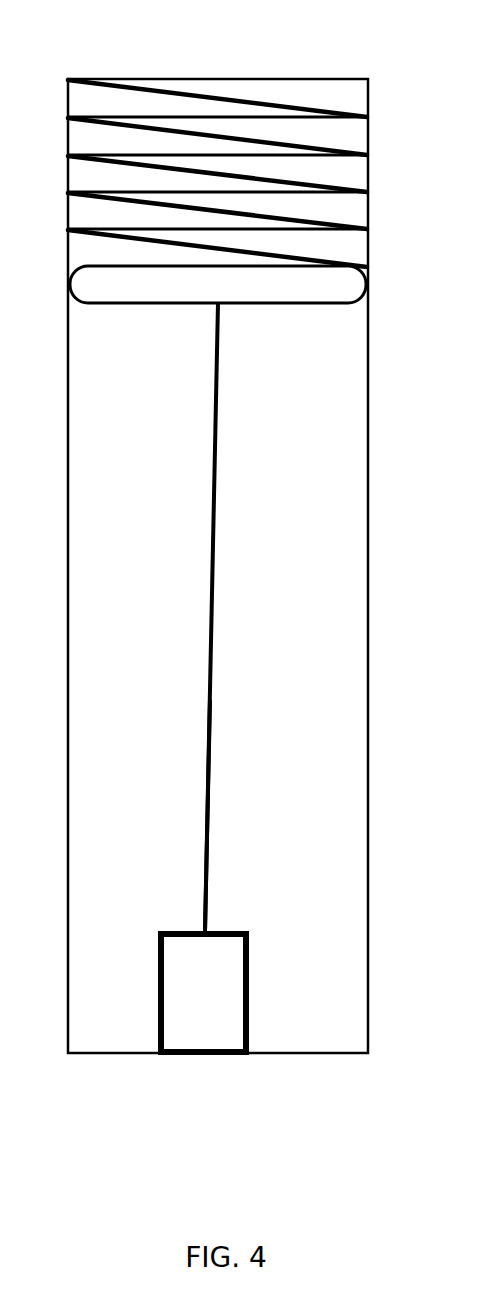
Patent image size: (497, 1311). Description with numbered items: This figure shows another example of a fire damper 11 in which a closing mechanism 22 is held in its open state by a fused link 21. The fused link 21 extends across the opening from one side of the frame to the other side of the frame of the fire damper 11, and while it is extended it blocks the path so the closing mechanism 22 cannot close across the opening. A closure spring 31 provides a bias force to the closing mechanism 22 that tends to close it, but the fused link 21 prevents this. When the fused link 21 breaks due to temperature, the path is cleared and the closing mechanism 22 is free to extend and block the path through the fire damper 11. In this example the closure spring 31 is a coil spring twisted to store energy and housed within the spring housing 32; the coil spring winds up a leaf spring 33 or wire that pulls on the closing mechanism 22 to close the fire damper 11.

The fire damper 11 is at (165, 78).
The closing mechanism 22 is at (112, 115).
The fused link 21 is at (218, 284).
The closure spring 31 is at (230, 574).
The leaf spring 33 is at (210, 822).
The spring housing 32 is at (203, 993).